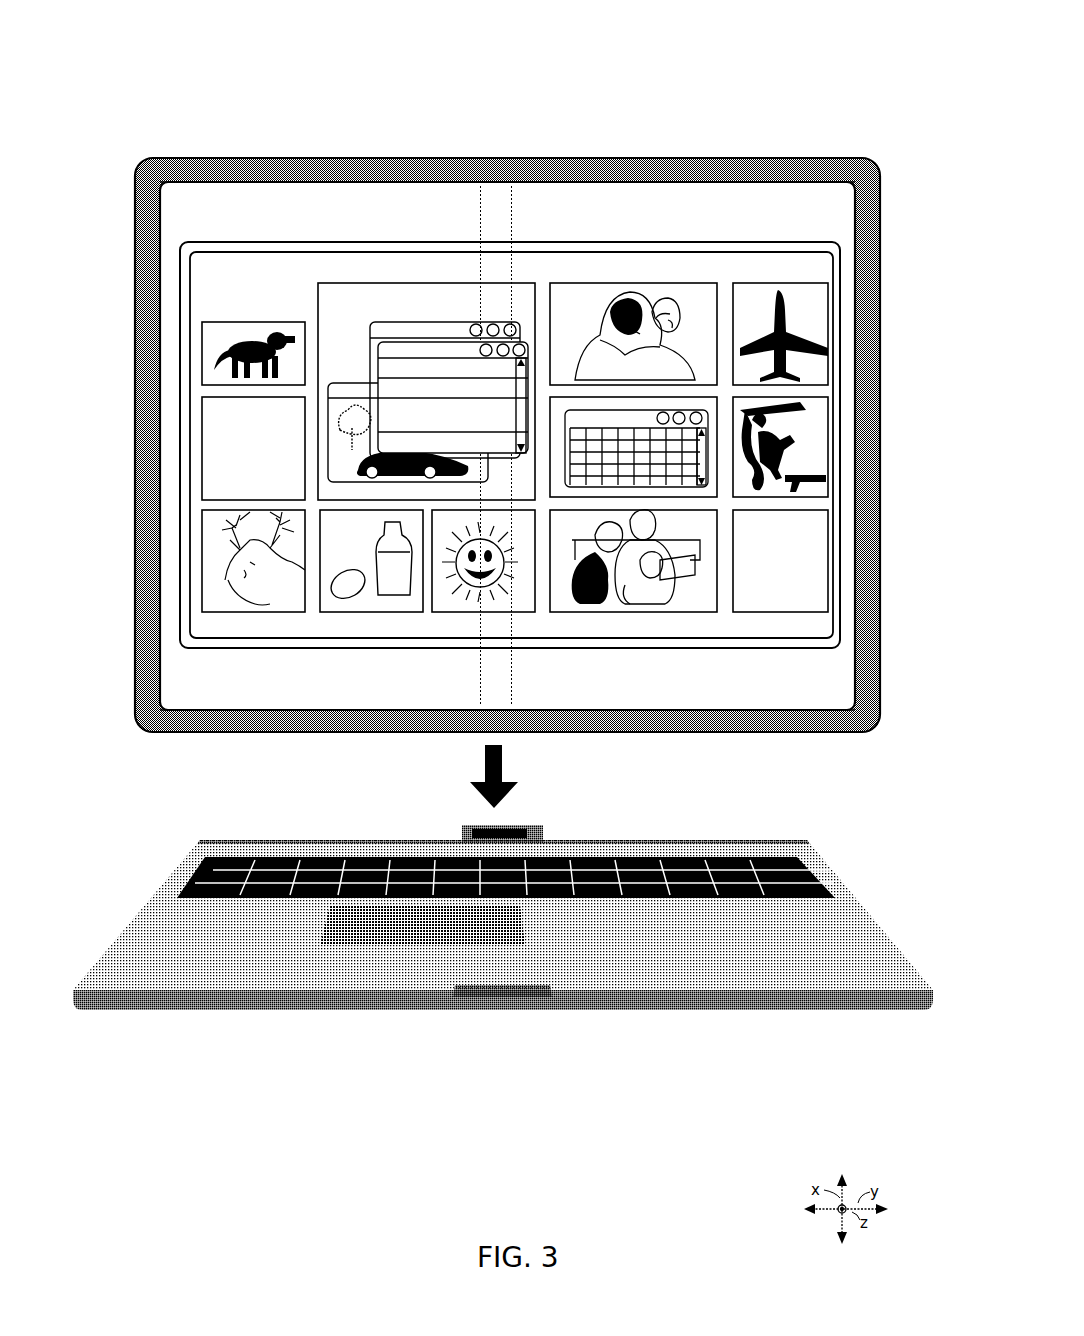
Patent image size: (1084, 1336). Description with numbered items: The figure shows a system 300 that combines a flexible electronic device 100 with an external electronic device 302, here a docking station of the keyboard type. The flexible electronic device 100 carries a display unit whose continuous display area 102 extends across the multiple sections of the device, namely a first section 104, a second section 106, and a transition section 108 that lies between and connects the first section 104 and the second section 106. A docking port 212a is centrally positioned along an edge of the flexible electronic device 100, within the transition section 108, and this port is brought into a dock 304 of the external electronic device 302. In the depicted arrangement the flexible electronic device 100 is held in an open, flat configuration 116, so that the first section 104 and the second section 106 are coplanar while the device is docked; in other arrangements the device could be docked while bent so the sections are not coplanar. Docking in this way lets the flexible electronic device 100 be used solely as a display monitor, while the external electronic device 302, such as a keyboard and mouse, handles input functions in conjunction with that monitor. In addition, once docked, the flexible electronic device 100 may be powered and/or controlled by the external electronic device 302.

The system 300 is at (221, 40).
The flexible electronic device 100 is at (160, 158).
The continuous display area 102 is at (180, 477).
The first section 104 is at (314, 146).
The second section 106 is at (709, 146).
The transition section 108 is at (491, 146).
The open, flat configuration 116 is at (795, 758).
The docking port 212a is at (520, 748).
The external electronic device 302 is at (216, 1020).
The dock 304 is at (462, 826).